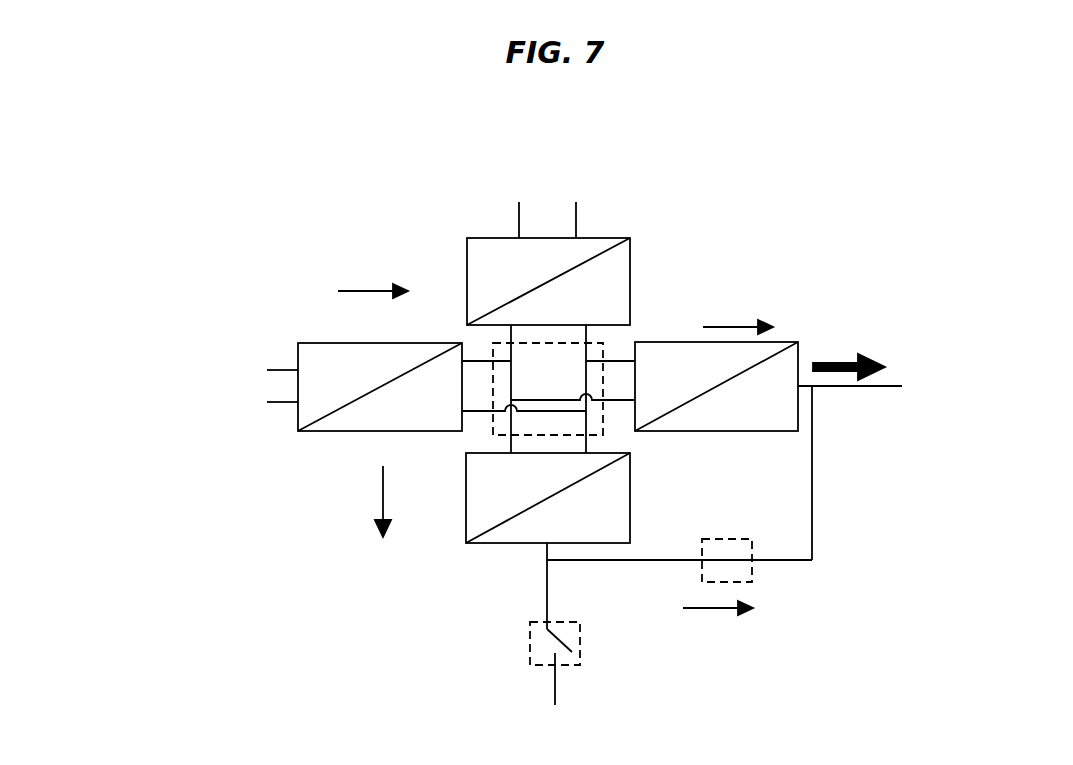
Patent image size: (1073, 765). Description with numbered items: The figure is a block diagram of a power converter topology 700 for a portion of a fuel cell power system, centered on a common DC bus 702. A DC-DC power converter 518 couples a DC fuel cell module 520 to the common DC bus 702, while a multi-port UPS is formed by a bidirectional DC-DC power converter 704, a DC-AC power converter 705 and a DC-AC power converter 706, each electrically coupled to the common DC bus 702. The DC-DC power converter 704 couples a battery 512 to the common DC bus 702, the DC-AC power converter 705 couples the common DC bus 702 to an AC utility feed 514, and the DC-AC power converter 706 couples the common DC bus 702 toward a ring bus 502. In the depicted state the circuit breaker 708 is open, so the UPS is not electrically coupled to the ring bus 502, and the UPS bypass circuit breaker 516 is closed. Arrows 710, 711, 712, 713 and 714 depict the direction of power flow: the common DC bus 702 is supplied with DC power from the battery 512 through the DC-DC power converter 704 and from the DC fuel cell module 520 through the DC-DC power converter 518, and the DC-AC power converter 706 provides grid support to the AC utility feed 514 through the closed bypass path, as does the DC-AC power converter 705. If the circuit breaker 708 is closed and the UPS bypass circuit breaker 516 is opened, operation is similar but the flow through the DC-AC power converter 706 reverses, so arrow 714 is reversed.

The power converter topology 700 is at (766, 215).
The common DC bus 702 is at (493, 436).
The DC-DC power converter 704 is at (333, 343).
The DC-AC power converter 705 is at (720, 431).
The DC-AC power converter 706 is at (631, 490).
The circuit breaker 708 is at (530, 641).
The arrow 710 is at (362, 290).
The arrow 711 is at (732, 327).
The arrow 712 is at (838, 363).
The arrow 713 is at (705, 608).
The arrow 714 is at (375, 492).
The UPS bypass circuit breaker 516 is at (723, 539).
The DC-DC power converter 518 is at (632, 275).
The DC fuel cell module 520 is at (545, 192).
The battery 512 is at (231, 387).
The AC utility feed 514 is at (904, 390).
The ring bus 502 is at (557, 706).